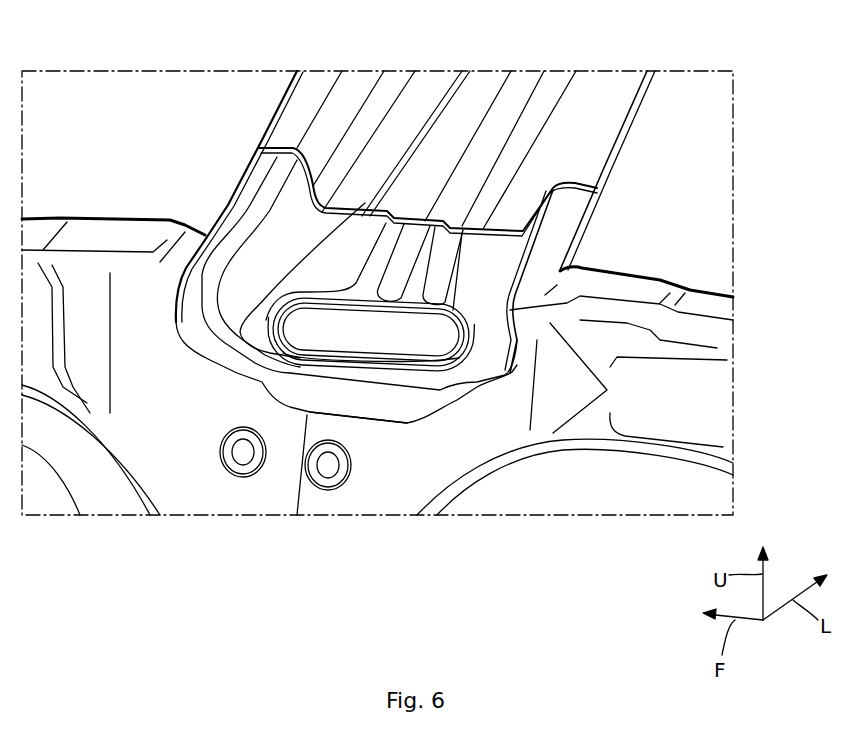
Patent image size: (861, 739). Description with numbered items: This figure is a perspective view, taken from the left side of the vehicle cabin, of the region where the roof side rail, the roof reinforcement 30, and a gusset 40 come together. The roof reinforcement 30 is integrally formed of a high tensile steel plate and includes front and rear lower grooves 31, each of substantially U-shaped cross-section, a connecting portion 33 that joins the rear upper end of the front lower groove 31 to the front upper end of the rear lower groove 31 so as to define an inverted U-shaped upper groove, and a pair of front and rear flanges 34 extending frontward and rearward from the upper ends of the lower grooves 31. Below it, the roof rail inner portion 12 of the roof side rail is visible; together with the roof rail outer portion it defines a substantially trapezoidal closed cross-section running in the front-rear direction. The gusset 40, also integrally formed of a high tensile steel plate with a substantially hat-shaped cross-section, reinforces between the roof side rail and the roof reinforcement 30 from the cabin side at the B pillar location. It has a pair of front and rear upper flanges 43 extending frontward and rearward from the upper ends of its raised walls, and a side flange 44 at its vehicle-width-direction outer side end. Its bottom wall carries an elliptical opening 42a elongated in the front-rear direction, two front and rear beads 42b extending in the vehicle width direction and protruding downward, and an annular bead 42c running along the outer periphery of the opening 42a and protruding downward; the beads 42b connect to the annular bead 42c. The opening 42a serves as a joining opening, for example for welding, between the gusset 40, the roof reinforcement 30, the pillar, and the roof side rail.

The roof reinforcement 30 is at (243, 103).
The lower groove 31 is at (428, 97).
The connecting portion 33 is at (483, 97).
The flange 34 is at (295, 112).
The gusset 40 is at (176, 336).
The opening 42a is at (437, 315).
The bead 42b is at (369, 241).
The annular bead 42c is at (437, 367).
The upper flange 43 is at (243, 193).
The side flange 44 is at (378, 410).
The roof rail inner portion 12 is at (557, 407).